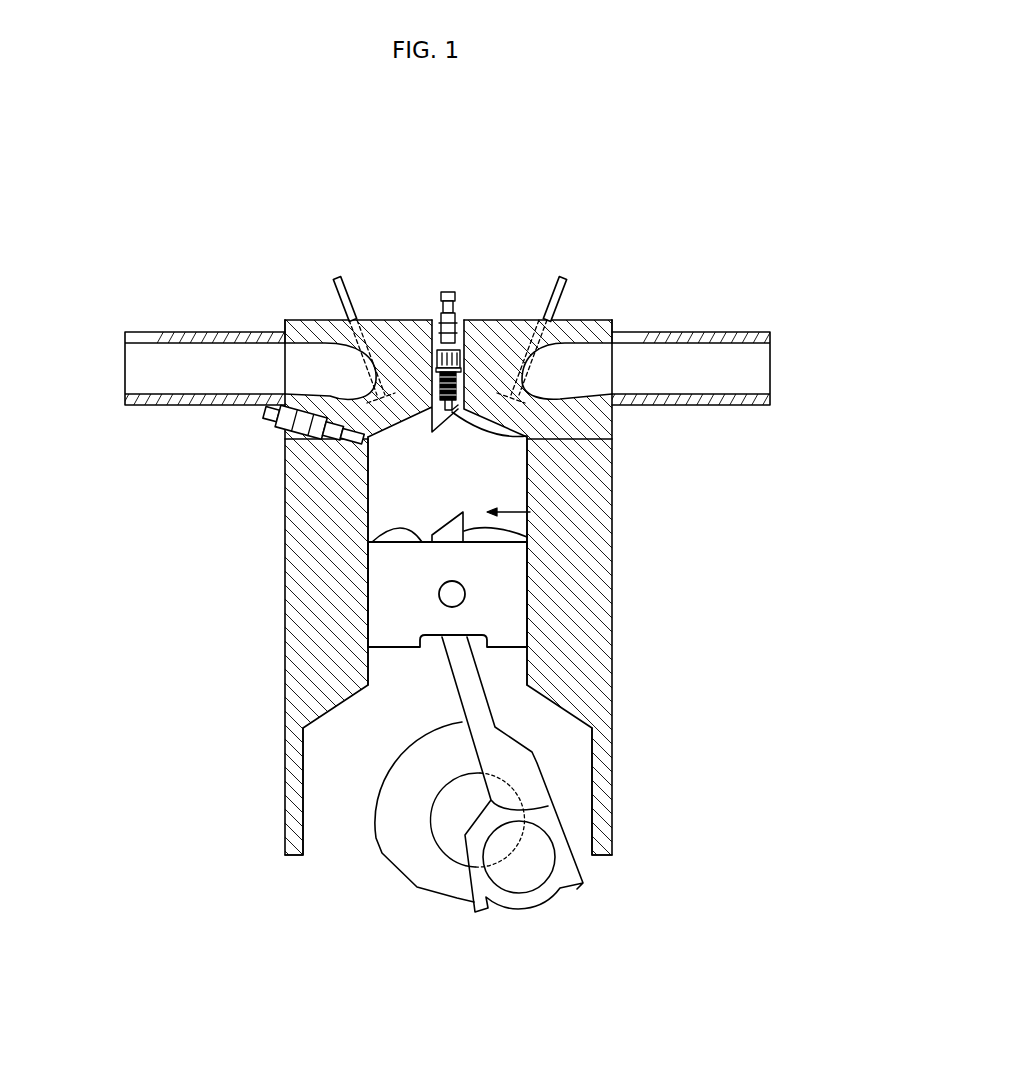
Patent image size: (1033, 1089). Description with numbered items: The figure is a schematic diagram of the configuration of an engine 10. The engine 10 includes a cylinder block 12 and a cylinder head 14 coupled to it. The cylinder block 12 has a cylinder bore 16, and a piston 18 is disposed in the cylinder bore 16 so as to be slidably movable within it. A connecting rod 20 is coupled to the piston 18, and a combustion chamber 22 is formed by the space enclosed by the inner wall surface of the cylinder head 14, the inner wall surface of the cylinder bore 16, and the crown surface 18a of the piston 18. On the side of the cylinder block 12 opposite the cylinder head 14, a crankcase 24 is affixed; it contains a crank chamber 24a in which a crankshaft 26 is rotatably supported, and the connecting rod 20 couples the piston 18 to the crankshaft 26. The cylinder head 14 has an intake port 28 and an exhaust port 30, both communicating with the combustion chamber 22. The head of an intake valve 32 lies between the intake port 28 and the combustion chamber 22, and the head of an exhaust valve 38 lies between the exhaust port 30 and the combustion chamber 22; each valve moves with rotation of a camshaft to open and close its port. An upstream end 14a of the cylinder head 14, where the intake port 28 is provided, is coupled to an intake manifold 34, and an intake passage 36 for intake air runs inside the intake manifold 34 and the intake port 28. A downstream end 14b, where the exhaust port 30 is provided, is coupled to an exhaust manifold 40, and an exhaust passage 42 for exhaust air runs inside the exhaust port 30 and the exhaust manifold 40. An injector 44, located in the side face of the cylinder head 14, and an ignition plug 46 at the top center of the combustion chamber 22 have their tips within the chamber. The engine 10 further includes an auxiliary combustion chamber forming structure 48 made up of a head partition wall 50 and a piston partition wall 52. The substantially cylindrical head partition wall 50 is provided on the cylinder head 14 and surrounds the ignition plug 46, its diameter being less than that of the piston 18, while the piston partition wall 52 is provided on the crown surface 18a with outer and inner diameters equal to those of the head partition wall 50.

The engine 10 is at (253, 182).
The cylinder block 12 is at (613, 470).
The cylinder head 14 is at (576, 320).
The upstream end 14a is at (284, 328).
The downstream end 14b is at (613, 332).
The cylinder bore 16 is at (527, 491).
The piston 18 is at (395, 596).
The crown surface 18a is at (395, 528).
The connecting rod 20 is at (455, 700).
The combustion chamber 22 is at (380, 447).
The crankcase 24 is at (605, 750).
The crank chamber 24a is at (406, 733).
The crankshaft 26 is at (548, 782).
The intake port 28 is at (300, 356).
The exhaust port 30 is at (598, 353).
The intake valve 32 is at (336, 278).
The intake manifold 34 is at (157, 332).
The intake passage 36 is at (208, 380).
The exhaust valve 38 is at (564, 278).
The exhaust manifold 40 is at (745, 332).
The exhaust passage 42 is at (733, 380).
The injector 44 is at (274, 417).
The ignition plug 46 is at (444, 292).
The auxiliary combustion chamber forming structure 48 is at (530, 512).
The head partition wall 50 is at (528, 436).
The piston partition wall 52 is at (465, 530).